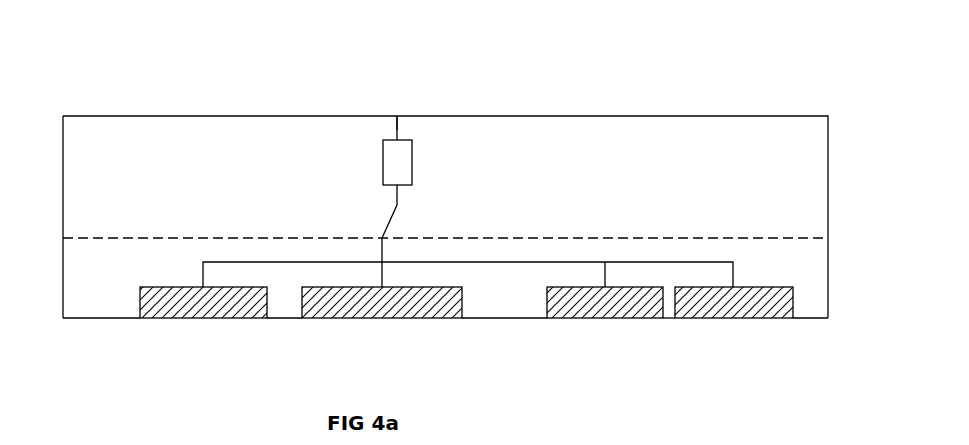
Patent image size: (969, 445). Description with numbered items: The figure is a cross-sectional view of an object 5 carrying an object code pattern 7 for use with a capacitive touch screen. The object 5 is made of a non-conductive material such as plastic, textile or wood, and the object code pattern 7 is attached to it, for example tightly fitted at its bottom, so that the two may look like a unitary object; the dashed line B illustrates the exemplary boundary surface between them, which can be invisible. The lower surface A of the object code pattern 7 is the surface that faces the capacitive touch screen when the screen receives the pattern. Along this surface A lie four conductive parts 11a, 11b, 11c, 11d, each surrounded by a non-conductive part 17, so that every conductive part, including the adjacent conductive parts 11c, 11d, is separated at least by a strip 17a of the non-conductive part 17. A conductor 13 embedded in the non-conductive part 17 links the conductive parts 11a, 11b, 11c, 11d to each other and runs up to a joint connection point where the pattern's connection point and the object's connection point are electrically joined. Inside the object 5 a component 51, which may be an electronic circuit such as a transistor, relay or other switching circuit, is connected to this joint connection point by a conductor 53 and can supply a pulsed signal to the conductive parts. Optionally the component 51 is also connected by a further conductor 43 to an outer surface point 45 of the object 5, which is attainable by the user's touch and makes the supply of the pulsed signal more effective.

The object 5 is at (205, 116).
The object code pattern 7 is at (63, 262).
The surface A is at (85, 318).
The boundary surface line B is at (86, 237).
The conductive part 11a is at (185, 318).
The conductive part 11b is at (352, 318).
The conductive part 11c is at (583, 318).
The conductive part 11d is at (757, 318).
The conductor 13 is at (283, 262).
The non-conductive part 17 is at (493, 303).
The strip of non-conductive part 17a is at (670, 305).
The conductor 43 is at (399, 128).
The outer surface point 45 is at (396, 124).
The component 51 is at (412, 158).
The conductor 53 is at (400, 205).